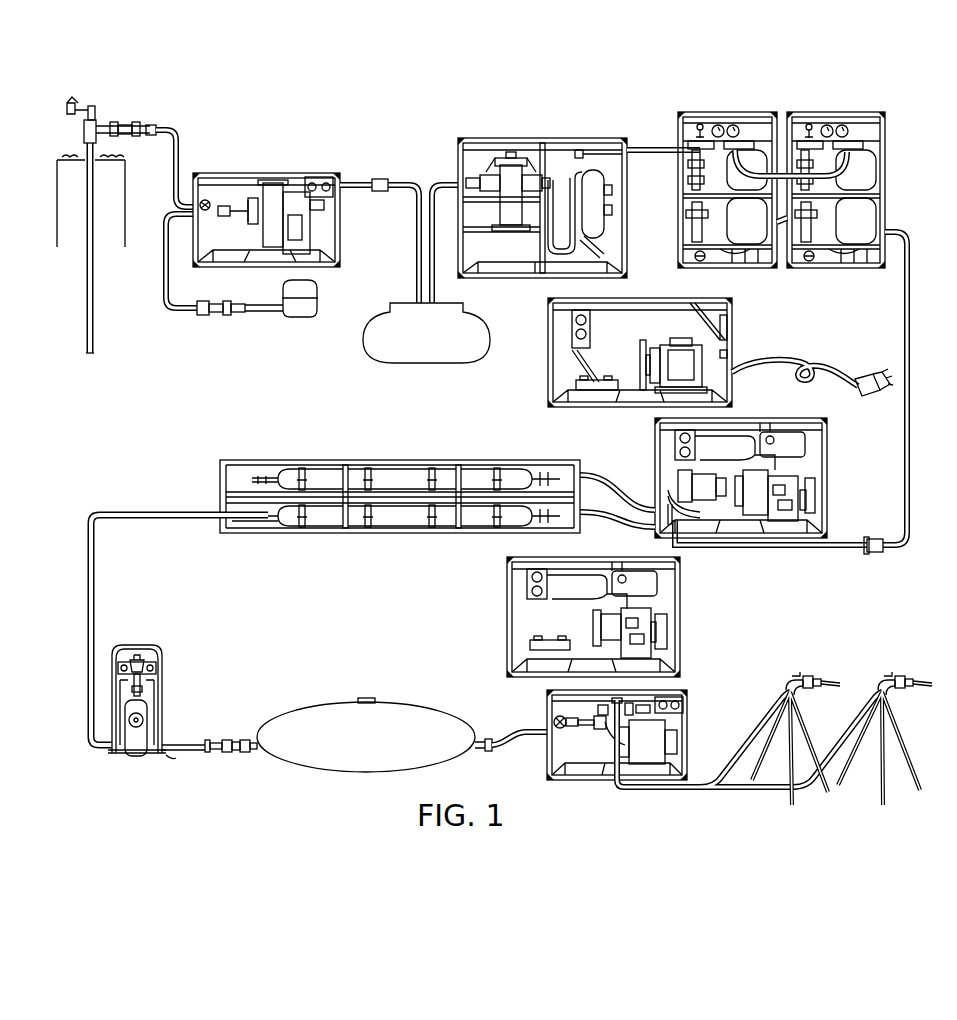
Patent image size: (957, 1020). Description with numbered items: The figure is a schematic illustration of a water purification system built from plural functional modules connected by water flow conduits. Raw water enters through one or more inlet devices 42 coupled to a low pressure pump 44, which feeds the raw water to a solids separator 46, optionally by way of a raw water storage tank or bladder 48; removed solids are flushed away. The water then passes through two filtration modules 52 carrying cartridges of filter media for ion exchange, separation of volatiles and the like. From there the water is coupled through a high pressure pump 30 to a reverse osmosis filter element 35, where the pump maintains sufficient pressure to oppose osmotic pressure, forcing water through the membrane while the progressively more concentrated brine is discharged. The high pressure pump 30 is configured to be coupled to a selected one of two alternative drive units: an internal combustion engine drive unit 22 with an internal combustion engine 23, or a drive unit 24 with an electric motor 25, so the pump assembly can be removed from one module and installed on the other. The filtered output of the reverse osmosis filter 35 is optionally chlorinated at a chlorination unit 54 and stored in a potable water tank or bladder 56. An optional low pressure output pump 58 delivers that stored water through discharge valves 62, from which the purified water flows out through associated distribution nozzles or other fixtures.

The internal combustion engine drive unit 22 is at (669, 547).
The internal combustion engine 23 is at (796, 503).
The drive unit 24 is at (720, 338).
The electric motor 25 is at (670, 334).
The high pressure pump 30 is at (673, 474).
The reverse osmosis filter element 35 is at (315, 464).
The inlet device 42 is at (103, 116).
The low pressure pump 44 is at (258, 169).
The solids separator 46 is at (561, 134).
The raw water storage tank or bladder 48 is at (400, 367).
The filtration modules 52 is at (721, 105).
The chlorination unit 54 is at (167, 683).
The potable water tank or bladder 56 is at (398, 700).
The low pressure output pump 58 is at (576, 788).
The discharge valves 62 is at (912, 674).